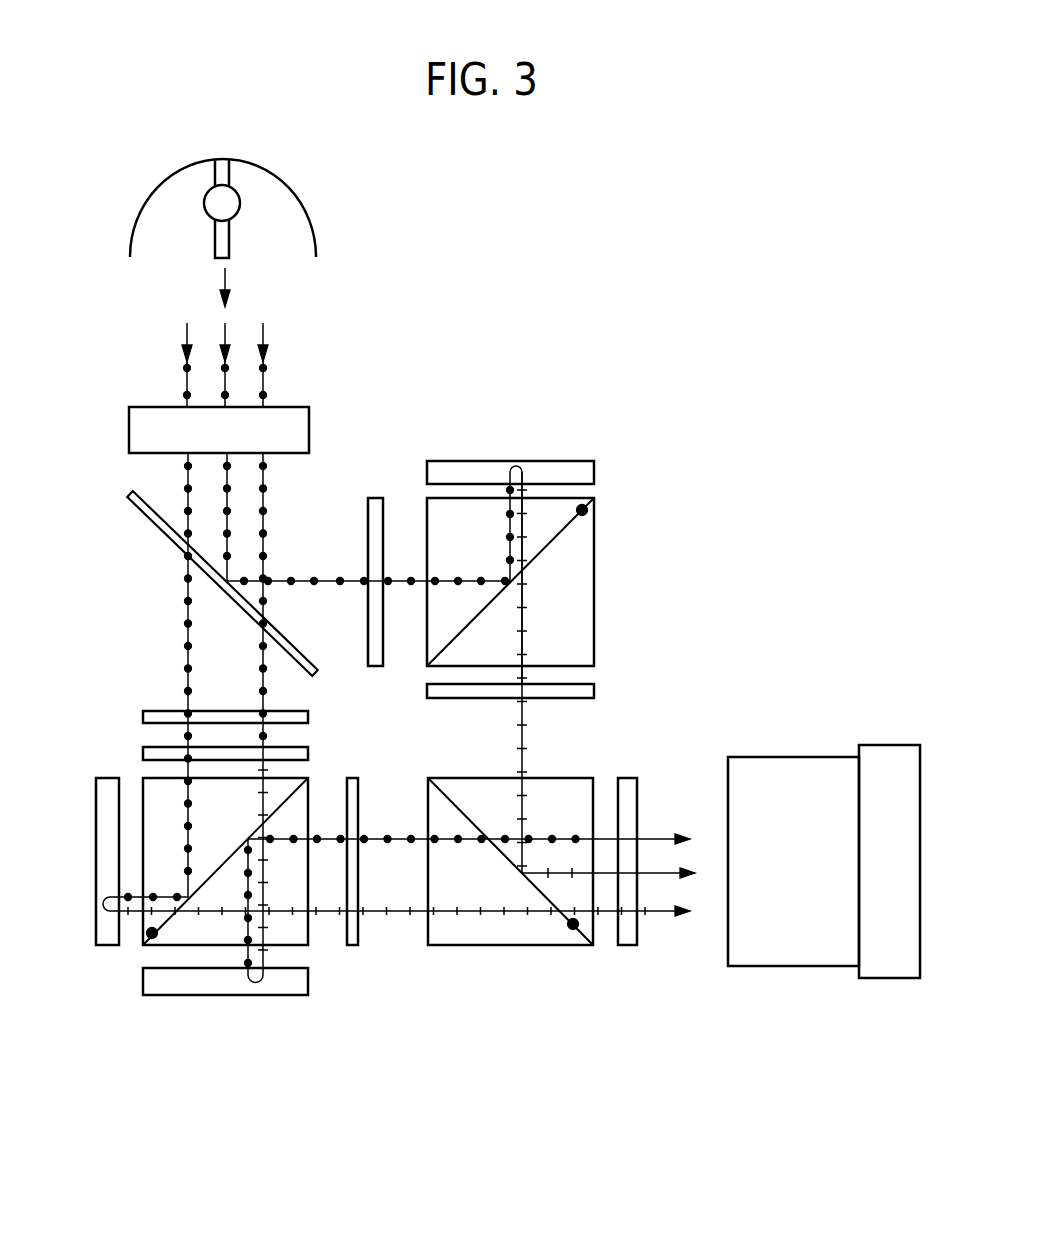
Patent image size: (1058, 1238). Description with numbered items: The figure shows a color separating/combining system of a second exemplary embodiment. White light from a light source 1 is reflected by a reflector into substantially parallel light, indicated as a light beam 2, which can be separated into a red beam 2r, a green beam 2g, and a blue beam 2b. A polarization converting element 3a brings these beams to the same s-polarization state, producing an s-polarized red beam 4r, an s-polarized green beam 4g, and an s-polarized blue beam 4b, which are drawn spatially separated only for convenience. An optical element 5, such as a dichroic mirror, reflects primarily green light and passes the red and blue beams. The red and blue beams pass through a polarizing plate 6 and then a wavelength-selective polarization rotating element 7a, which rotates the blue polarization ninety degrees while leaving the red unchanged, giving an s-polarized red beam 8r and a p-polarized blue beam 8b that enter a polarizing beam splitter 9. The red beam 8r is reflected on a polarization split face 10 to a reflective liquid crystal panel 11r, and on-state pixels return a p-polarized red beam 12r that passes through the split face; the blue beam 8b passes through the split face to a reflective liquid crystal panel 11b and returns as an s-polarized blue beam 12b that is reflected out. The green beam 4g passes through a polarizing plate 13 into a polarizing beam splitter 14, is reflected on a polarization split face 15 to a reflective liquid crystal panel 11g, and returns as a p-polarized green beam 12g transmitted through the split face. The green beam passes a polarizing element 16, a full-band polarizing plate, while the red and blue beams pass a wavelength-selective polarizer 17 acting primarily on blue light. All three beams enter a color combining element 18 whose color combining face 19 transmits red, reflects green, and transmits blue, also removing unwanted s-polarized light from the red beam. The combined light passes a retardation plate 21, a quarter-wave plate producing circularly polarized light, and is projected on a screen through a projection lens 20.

The light source 1 is at (240, 206).
The white light 2 is at (229, 274).
The red beam 2r is at (187, 333).
The green beam 2g is at (228, 330).
The blue beam 2b is at (265, 338).
The polarization converting element 3a is at (132, 427).
The s-polarized red beam 4r is at (180, 490).
The s-polarized green beam 4g is at (228, 490).
The s-polarized blue beam 4b is at (265, 488).
The optical element 5 is at (135, 510).
The polarizing plate 6 is at (143, 716).
The polarizing plate 7a is at (143, 752).
The s-polarized red beam 8r is at (185, 792).
The p-polarized blue beam 8b is at (265, 765).
The polarizing beam splitter 9 is at (148, 793).
The polarization split face 10 is at (152, 936).
The reflective liquid crystal panel 11r is at (95, 870).
The reflective liquid crystal panel 11g is at (487, 462).
The reflective liquid crystal panel 11b is at (228, 985).
The p-polarized red beam 12r is at (332, 915).
The p-polarized green beam 12g is at (525, 648).
The s-polarized blue beam 12b is at (336, 836).
The polarizing plate 13 is at (373, 498).
The polarizing beam splitter 14 is at (427, 627).
The polarization split face 15 is at (582, 508).
The polarizing element 16 is at (567, 702).
The wavelength-selective polarizer 17 is at (360, 925).
The color combining element 18 is at (465, 935).
The color combining face 19 is at (570, 930).
The projection lens 20 is at (793, 772).
The retardation plate 21 is at (617, 928).